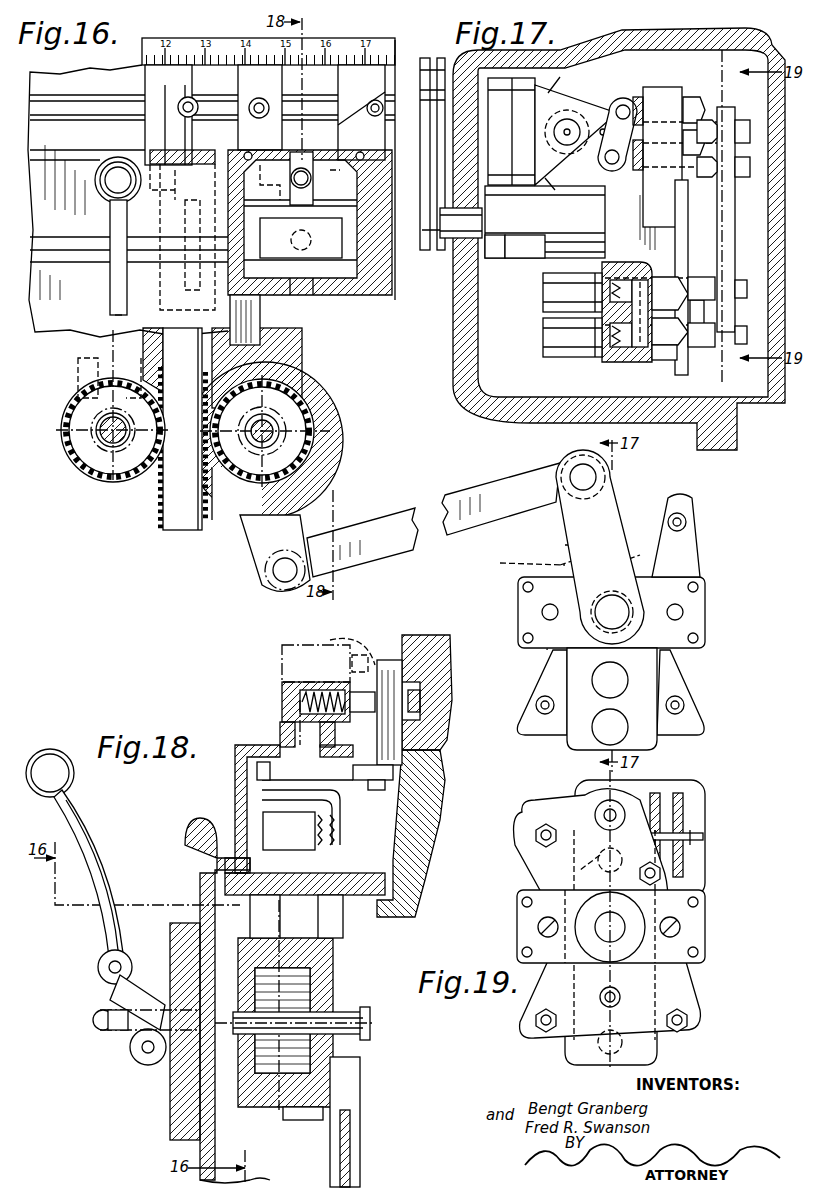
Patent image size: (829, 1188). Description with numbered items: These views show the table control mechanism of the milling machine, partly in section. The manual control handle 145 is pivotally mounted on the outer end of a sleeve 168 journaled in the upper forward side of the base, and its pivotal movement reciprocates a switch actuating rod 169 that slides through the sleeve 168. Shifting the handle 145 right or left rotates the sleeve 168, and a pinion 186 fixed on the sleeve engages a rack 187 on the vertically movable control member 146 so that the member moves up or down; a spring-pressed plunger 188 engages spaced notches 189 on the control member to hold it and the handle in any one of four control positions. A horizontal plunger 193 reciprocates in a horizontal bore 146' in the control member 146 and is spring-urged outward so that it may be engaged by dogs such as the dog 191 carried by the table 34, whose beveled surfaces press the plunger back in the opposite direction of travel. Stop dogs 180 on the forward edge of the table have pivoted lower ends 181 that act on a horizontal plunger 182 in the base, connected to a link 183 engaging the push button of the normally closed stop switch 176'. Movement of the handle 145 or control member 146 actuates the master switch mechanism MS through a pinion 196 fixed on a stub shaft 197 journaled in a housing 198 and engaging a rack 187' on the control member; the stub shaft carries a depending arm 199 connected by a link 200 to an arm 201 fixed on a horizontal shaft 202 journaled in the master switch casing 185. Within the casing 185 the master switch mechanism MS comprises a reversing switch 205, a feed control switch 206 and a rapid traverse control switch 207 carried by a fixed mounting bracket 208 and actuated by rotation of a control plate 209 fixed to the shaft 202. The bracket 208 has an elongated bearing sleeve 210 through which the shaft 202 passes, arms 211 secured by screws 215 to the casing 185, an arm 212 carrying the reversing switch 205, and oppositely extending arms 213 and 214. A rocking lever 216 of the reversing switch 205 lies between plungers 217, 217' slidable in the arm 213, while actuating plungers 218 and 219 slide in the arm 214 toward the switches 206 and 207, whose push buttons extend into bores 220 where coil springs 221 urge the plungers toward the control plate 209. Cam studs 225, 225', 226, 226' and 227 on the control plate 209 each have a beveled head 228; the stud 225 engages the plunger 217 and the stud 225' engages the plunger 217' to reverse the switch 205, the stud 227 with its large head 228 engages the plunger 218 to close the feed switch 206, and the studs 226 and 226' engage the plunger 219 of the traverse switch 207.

In FIG. 18, the table 34 is at (405, 767).
In FIG. 16, the manual control handle 145 is at (108, 300).
In FIG. 18, the manual control handle 145 is at (100, 840).
In FIG. 16, the control member 146 is at (223, 92).
In FIG. 18, the control member 146 is at (296, 714).
In FIG. 18, the horizontal bore 146' is at (306, 654).
In FIG. 18, the sleeve 168 is at (135, 1040).
In FIG. 18, the switch actuating rod 169 is at (98, 1026).
In FIG. 16, the stop switch 176' is at (287, 303).
In FIG. 18, the stop switch 176' is at (269, 827).
In FIG. 16, the stop dogs 180 is at (170, 72).
In FIG. 18, the stop dogs 180 is at (385, 665).
In FIG. 18, the pivoted lower ends 181 is at (407, 777).
In FIG. 16, the horizontal plunger 182 is at (312, 176).
In FIG. 18, the horizontal plunger 182 is at (383, 792).
In FIG. 16, the link 183 is at (305, 197).
In FIG. 18, the link 183 is at (262, 792).
In FIG. 17, the casing 185 is at (455, 380).
In FIG. 16, the pinion 186 is at (103, 468).
In FIG. 16, the rack 187 is at (159, 433).
In FIG. 16, the rack 187' is at (221, 544).
In FIG. 16, the spring-pressed plunger 188 is at (124, 312).
In FIG. 16, the notches 189 is at (170, 215).
In FIG. 16, the dog 191 is at (365, 72).
In FIG. 18, the horizontal plunger 193 is at (346, 642).
In FIG. 16, the pinion 196 is at (300, 430).
In FIG. 18, the pinion 196 is at (282, 1075).
In FIG. 16, the stub shaft 197 is at (275, 435).
In FIG. 18, the stub shaft 197 is at (368, 1026).
In FIG. 16, the housing 198 is at (290, 497).
In FIG. 18, the housing 198 is at (258, 1105).
In FIG. 16, the depending arm 199 is at (268, 567).
In FIG. 18, the depending arm 199 is at (352, 1100).
In FIG. 16, the link 200 is at (395, 548).
In FIG. 16, the arm 201 is at (612, 492).
In FIG. 17, the arm 201 is at (425, 150).
In FIG. 16, the horizontal shaft 202 is at (620, 617).
In FIG. 17, the horizontal shaft 202 is at (455, 240).
In FIG. 17, the reversing switch 205 is at (582, 100).
In FIG. 16, the feed control switch 206 is at (595, 678).
In FIG. 17, the feed control switch 206 is at (556, 288).
In FIG. 16, the rapid traverse control switch 207 is at (605, 735).
In FIG. 17, the rapid traverse control switch 207 is at (556, 327).
In FIG. 16, the mounting bracket 208 is at (708, 585).
In FIG. 17, the mounting bracket 208 is at (570, 222).
In FIG. 19, the mounting bracket 208 is at (706, 925).
In FIG. 17, the control plate 209 is at (682, 365).
In FIG. 17, the bearing sleeve 210 is at (535, 258).
In FIG. 17, the arms 211 is at (495, 260).
In FIG. 19, the arms 211 is at (530, 937).
In FIG. 17, the arm 212 is at (505, 95).
In FIG. 19, the arm 212 is at (700, 787).
In FIG. 17, the arm 213 is at (660, 90).
In FIG. 19, the arm 213 is at (630, 797).
In FIG. 17, the arm 214 is at (668, 389).
In FIG. 19, the screws 215 is at (540, 925).
In FIG. 17, the rocking lever 216 is at (620, 108).
In FIG. 17, the plunger 217 is at (703, 94).
In FIG. 17, the plunger 217' is at (713, 118).
In FIG. 19, the plunger 217' is at (587, 869).
In FIG. 17, the actuating plunger 218 is at (672, 283).
In FIG. 17, the actuating plunger 219 is at (663, 360).
In FIG. 19, the actuating plunger 219 is at (632, 1047).
In FIG. 17, the bores 220 is at (622, 362).
In FIG. 17, the coil spring 221 is at (603, 362).
In FIG. 16, the cam stud 225 is at (521, 554).
In FIG. 17, the cam stud 225 is at (734, 157).
In FIG. 19, the cam stud 225 is at (707, 835).
In FIG. 16, the cam stud 225' is at (714, 511).
In FIG. 17, the cam stud 225' is at (736, 123).
In FIG. 19, the cam stud 225' is at (561, 854).
In FIG. 16, the cam stud 226 is at (516, 697).
In FIG. 17, the cam stud 226 is at (704, 329).
In FIG. 19, the cam stud 226 is at (712, 1017).
In FIG. 16, the cam stud 226' is at (717, 696).
In FIG. 19, the cam stud 226' is at (523, 1029).
In FIG. 17, the cam stud 227 is at (730, 283).
In FIG. 19, the cam stud 227 is at (600, 994).
In FIG. 17, the head 228 is at (670, 323).
In FIG. 16, the master switch mechanism MS is at (558, 740).
In FIG. 17, the master switch mechanism MS is at (492, 347).
In FIG. 19, the master switch mechanism MS is at (558, 1047).